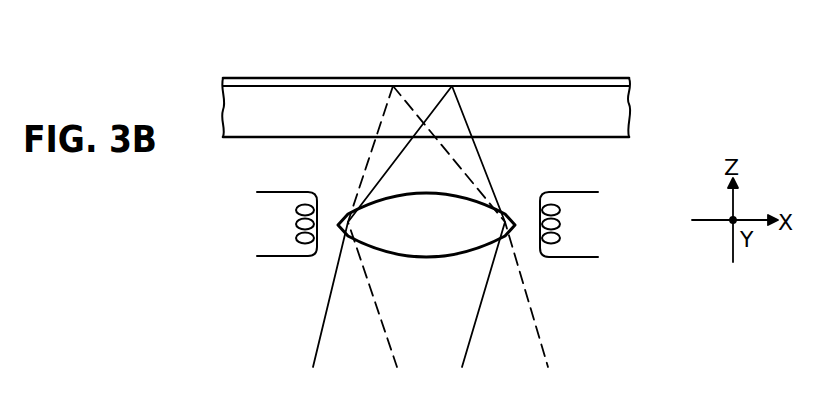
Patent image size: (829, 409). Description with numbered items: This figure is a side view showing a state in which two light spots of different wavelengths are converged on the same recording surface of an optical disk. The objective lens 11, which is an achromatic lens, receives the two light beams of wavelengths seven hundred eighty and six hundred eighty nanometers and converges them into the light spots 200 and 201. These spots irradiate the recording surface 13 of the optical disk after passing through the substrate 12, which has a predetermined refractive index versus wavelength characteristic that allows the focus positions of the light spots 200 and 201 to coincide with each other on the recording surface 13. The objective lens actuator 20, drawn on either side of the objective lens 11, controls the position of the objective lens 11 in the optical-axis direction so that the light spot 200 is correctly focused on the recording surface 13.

The objective lens 11 is at (428, 243).
The substrate 12 is at (630, 104).
The recording surface 13 is at (572, 78).
The objective lens actuator 20 is at (288, 256).
The light spot 200 is at (392, 84).
The light spot 201 is at (451, 84).